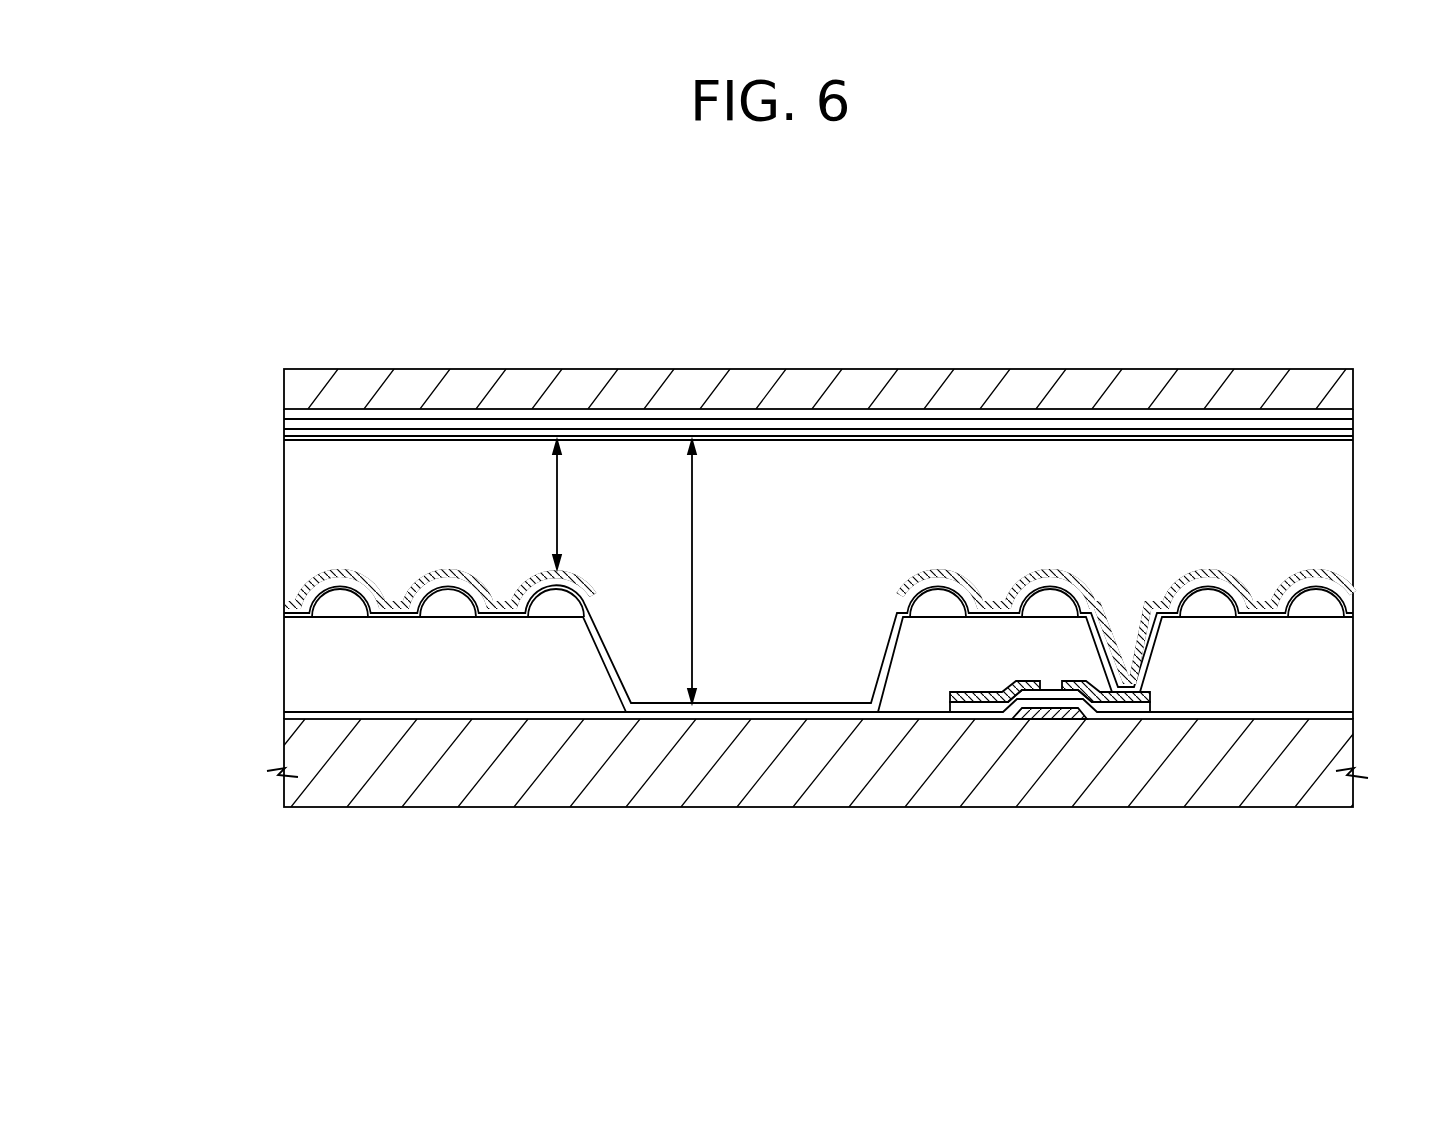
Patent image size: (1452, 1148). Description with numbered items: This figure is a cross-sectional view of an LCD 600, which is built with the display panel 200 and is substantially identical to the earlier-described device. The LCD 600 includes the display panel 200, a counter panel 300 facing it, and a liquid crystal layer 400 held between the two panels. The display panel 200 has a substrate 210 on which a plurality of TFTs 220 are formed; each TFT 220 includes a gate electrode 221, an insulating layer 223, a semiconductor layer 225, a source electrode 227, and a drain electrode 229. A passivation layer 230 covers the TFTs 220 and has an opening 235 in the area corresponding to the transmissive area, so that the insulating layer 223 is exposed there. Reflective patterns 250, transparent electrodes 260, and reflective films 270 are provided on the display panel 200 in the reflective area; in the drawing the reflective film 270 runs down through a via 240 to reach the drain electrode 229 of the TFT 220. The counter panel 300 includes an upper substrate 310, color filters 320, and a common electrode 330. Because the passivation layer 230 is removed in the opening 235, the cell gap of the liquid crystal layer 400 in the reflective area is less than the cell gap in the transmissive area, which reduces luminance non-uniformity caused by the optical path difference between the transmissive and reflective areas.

The LCD 600 is at (780, 589).
The display panel 200 is at (813, 719).
The substrate 210 is at (799, 763).
The TFT 220 is at (818, 798).
The gate electrode 221 is at (1047, 788).
The insulating layer 223 is at (818, 783).
The semiconductor layer 225 is at (1050, 779).
The source electrode 227 is at (992, 774).
The drain electrode 229 is at (1113, 774).
The passivation layer 230 is at (765, 668).
The opening 235 is at (752, 646).
The via hole 240 is at (819, 601).
The reflective pattern 250 is at (761, 627).
The transparent electrode 260 is at (765, 644).
The reflective film 270 is at (765, 601).
The counter panel 300 is at (732, 421).
The upper substrate 310 is at (765, 389).
The color filter 320 is at (765, 423).
The common electrode 330 is at (765, 455).
The liquid crystal layer 400 is at (765, 528).